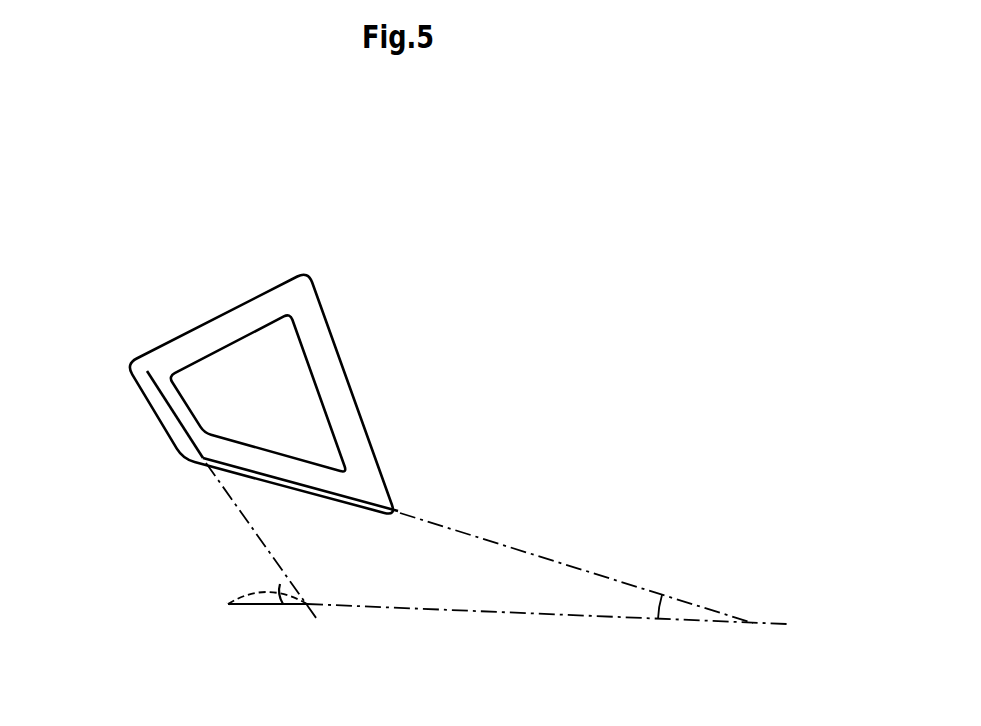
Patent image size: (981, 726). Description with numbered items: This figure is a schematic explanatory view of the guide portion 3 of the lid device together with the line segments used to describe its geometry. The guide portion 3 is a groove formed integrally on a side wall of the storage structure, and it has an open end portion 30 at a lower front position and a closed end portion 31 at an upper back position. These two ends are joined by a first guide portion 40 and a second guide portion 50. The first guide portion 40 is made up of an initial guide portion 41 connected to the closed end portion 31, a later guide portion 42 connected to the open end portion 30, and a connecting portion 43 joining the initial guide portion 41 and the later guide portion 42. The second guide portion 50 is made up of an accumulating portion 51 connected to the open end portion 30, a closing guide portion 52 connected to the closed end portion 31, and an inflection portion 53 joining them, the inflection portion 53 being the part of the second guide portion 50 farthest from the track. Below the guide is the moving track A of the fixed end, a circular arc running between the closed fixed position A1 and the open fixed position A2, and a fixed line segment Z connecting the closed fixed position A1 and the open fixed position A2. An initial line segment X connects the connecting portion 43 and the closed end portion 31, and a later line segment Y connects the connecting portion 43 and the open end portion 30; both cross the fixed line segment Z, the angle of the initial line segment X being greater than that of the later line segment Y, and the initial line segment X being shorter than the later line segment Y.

The guide portion 3 is at (305, 257).
The open end portion 30 is at (397, 515).
The closed end portion 31 is at (126, 365).
The first guide portion 40 is at (247, 441).
The initial guide portion 41 is at (154, 421).
The later guide portion 42 is at (290, 458).
The connecting portion 43 is at (181, 459).
The second guide portion 50 is at (327, 322).
The accumulating portion 51 is at (354, 390).
The closing guide portion 52 is at (207, 320).
The inflection portion 53 is at (305, 266).
The initial line segment X is at (158, 389).
The later line segment Y is at (289, 478).
The fixed line segment Z is at (261, 606).
The moving track A is at (257, 594).
The closed fixed position A1 is at (228, 604).
The open fixed position A2 is at (303, 606).